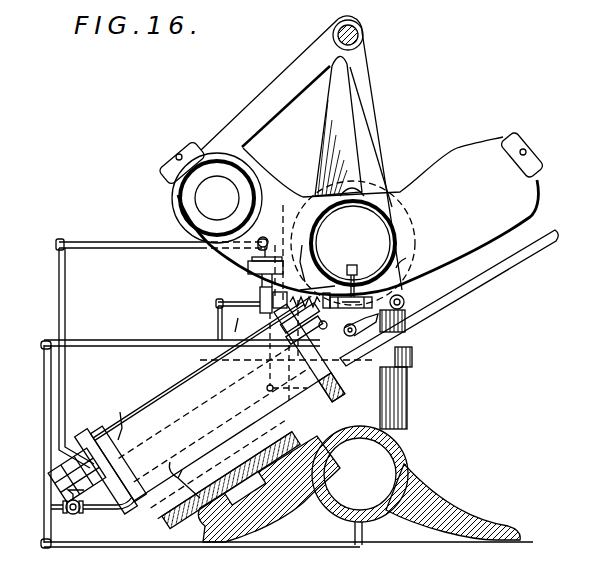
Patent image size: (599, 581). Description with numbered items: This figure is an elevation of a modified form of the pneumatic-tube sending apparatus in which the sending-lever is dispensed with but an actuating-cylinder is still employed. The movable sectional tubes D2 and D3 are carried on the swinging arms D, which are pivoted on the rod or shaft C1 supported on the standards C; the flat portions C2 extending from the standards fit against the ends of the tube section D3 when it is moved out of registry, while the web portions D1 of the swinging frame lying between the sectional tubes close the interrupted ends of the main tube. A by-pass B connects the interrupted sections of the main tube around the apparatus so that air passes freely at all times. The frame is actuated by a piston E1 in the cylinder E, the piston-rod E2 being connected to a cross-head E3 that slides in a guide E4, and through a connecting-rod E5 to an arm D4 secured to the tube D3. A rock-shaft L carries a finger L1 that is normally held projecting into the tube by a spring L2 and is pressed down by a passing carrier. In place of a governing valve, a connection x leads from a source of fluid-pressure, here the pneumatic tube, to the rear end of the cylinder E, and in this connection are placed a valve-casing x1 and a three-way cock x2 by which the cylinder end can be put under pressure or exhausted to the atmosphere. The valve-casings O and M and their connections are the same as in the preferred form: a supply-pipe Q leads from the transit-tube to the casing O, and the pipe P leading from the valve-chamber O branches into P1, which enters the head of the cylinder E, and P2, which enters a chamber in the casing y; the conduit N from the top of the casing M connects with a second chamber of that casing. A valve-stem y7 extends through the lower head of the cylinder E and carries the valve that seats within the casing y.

The flat portions extending from the standards C2 is at (351, 265).
The swinging arms D is at (301, 153).
The rod or shaft C1 is at (364, 38).
The standards C is at (325, 135).
The sectional tube D2 is at (255, 207).
The web portions of the swinging frame D1 is at (231, 206).
The main-tube section D3 is at (392, 232).
The finger L1 is at (372, 262).
The arm D4 is at (392, 273).
The spring L2 is at (303, 255).
The rock-shaft L is at (317, 278).
The pipe or conduit N is at (132, 238).
The cylinder or valve-casing M is at (247, 270).
The valve-casing O is at (307, 297).
The pipe P is at (216, 304).
The branch of pipe P P1 is at (232, 329).
The supply-pipe Q is at (270, 320).
The branch of pipe P P2 is at (143, 335).
The three-way cock x2 is at (85, 512).
The casing y is at (78, 487).
The valve-casing x1 is at (60, 478).
The cylinder E is at (230, 410).
The piston E1 is at (152, 434).
The valve-stem y7 is at (115, 418).
The piston-rod E2 is at (238, 402).
The connection x is at (168, 500).
The connecting-rod E5 is at (406, 302).
The guide E4 is at (500, 298).
The cross-head E3 is at (412, 340).
The by-pass B is at (341, 456).